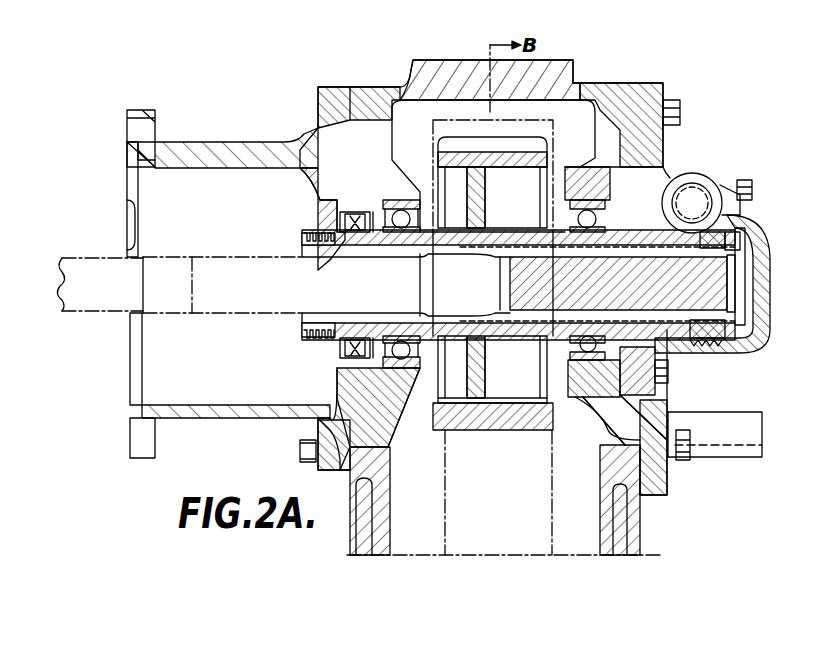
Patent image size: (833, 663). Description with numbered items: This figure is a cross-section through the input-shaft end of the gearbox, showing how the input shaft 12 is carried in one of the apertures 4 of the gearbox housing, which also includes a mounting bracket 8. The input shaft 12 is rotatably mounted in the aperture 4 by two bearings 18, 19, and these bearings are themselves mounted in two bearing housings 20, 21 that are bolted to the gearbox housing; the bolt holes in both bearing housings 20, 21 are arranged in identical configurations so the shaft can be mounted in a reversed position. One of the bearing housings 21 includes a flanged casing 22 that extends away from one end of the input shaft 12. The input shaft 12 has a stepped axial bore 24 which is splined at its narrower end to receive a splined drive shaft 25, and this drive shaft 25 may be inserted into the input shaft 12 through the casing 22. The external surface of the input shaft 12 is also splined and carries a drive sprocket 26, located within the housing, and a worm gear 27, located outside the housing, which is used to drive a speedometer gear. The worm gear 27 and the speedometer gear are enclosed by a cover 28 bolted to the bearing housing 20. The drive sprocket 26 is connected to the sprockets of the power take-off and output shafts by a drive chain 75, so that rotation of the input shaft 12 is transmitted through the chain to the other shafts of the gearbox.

The aperture 4 is at (500, 334).
The mounting bracket 8 is at (740, 443).
The input shaft 12 is at (728, 243).
The bearing 18 is at (560, 370).
The bearing 19 is at (383, 362).
The bearing housing 20 is at (622, 428).
The bearing housing 21 is at (330, 420).
The flanged casing 22 is at (188, 408).
The stepped axial bore 24 is at (326, 320).
The splined drive shaft 25 is at (157, 305).
The drive sprocket 26 is at (452, 425).
The worm gear 27 is at (712, 340).
The cover 28 is at (765, 290).
The drive chain 75 is at (450, 533).